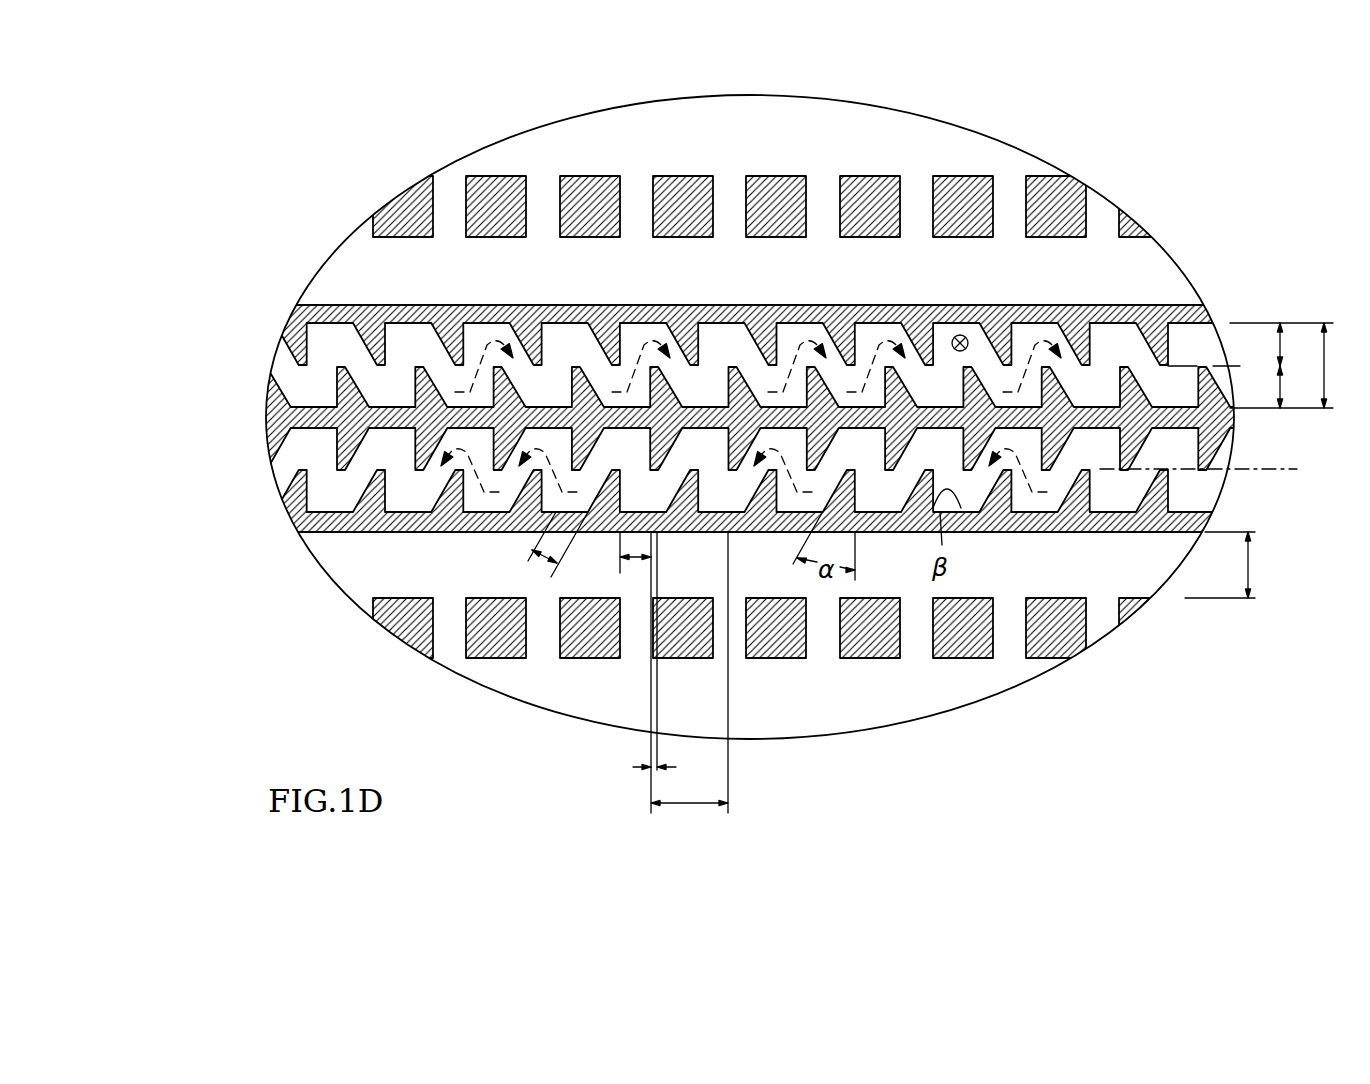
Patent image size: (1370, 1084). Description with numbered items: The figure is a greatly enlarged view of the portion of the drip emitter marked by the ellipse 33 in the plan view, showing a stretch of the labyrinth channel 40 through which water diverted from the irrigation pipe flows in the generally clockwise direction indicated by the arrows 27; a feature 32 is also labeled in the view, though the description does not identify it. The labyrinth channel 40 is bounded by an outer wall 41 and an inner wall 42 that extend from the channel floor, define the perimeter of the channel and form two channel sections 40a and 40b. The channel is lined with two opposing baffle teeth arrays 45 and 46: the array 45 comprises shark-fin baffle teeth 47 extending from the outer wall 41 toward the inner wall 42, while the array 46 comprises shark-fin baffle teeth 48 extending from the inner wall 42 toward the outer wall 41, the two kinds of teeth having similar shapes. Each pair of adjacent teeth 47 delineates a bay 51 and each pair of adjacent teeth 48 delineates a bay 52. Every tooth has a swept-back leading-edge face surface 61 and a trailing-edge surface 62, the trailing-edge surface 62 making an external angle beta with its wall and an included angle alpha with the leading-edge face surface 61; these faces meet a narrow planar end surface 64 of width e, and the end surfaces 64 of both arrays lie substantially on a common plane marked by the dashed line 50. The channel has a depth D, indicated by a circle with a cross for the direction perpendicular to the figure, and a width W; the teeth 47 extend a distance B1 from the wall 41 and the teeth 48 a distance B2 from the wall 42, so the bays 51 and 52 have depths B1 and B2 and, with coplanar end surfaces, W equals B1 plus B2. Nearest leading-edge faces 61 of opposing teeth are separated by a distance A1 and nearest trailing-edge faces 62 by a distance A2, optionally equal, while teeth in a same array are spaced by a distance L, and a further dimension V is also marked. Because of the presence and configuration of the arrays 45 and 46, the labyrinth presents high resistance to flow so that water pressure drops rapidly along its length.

The arrows 27 is at (685, 187).
The substrate 32 is at (638, 193).
The ellipse 33 is at (992, 136).
The labyrinth channel 40 is at (168, 350).
The channel section 40a is at (258, 365).
The channel section 40b is at (258, 467).
The outer wall 41 is at (412, 316).
The inner wall 42 is at (297, 413).
The baffle teeth array 45 is at (282, 220).
The baffle teeth array 46 is at (1177, 302).
The shark-fin baffle tooth 47 is at (447, 477).
The shark-fin baffle tooth 48 is at (1062, 368).
The dashed line 50 is at (1240, 366).
The bay 51 is at (490, 333).
The bay 52 is at (546, 388).
The leading-edge face surface 61 is at (718, 312).
The trailing-edge surface 62 is at (805, 322).
The end surface 64 is at (862, 345).
The channel depth D is at (965, 336).
The channel width W is at (1290, 365).
The tooth extension distance B1 is at (1295, 344).
The tooth extension distance B2 is at (1295, 387).
The wall offset V is at (1227, 565).
The tooth separation distance L is at (689, 672).
The end surface width e is at (646, 656).
The leading-edge separation distance A1 is at (537, 560).
The trailing-edge separation distance A2 is at (625, 565).